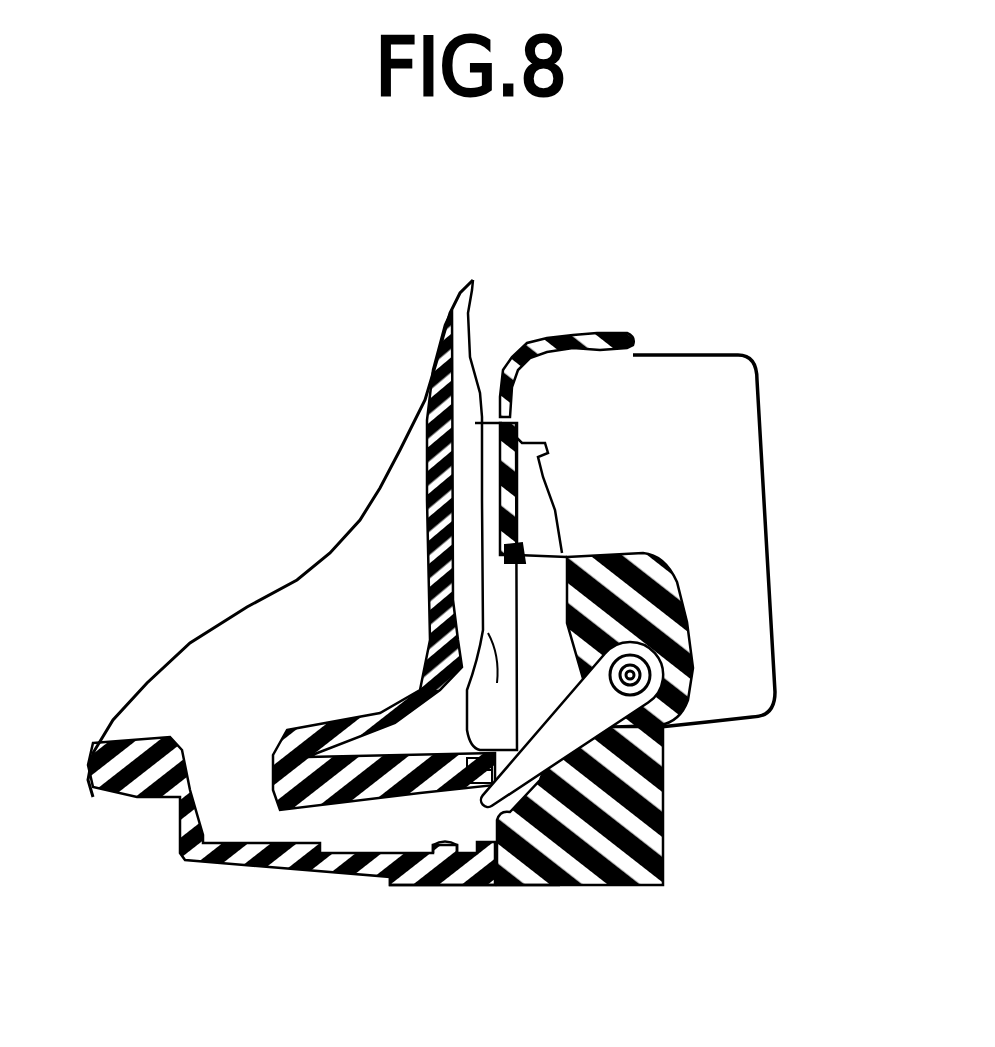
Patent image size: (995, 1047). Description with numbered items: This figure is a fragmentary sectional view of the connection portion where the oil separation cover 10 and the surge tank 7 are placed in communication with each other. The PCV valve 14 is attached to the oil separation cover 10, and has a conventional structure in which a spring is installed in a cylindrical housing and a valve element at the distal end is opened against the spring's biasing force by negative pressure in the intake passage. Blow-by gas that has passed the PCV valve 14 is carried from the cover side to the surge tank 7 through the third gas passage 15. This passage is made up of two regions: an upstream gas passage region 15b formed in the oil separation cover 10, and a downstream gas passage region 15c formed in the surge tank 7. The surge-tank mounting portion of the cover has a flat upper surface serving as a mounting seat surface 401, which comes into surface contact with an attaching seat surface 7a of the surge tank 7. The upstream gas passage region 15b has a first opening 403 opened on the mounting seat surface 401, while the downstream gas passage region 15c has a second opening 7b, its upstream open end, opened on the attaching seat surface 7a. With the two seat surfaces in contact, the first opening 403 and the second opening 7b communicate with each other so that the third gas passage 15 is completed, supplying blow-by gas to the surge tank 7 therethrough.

The surge tank 7 is at (130, 822).
The attaching seat surface 7a is at (510, 885).
The second opening 7b is at (493, 885).
The oil separation cover 10 is at (578, 317).
The PCV valve 14 is at (662, 661).
The third gas passage 15 is at (410, 847).
The upstream gas passage region 15b is at (660, 755).
The downstream gas passage region 15c is at (440, 848).
The mounting seat surface 401 is at (660, 797).
The first opening 403 is at (660, 880).